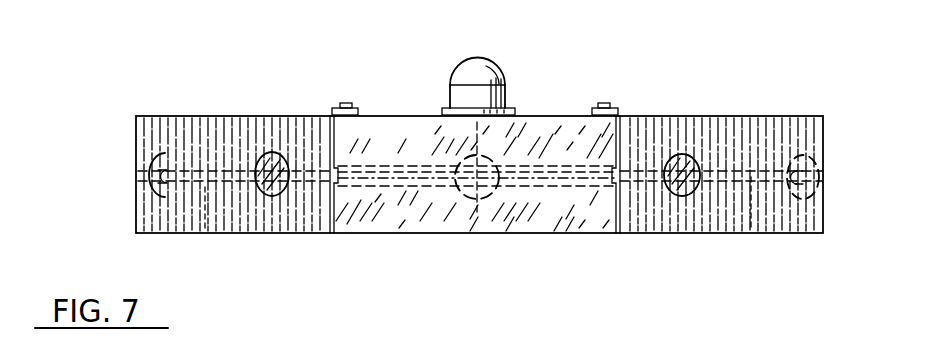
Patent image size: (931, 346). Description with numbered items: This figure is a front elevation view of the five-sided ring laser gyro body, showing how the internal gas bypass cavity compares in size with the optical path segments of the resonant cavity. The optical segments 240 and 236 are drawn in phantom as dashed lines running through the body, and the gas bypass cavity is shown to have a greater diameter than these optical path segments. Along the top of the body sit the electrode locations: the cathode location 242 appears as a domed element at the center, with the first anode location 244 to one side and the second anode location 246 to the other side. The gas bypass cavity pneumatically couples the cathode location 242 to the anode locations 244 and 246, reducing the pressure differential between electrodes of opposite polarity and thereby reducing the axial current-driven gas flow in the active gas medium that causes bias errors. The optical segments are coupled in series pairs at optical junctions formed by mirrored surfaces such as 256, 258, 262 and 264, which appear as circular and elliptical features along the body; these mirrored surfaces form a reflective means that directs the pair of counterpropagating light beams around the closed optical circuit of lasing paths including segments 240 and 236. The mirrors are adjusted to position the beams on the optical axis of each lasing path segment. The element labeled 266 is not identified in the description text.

The optical segment 236 is at (761, 232).
The optical segment 240 is at (206, 233).
The cathode location 242 is at (498, 76).
The anode 1 location 244 is at (344, 103).
The anode 2 location 246 is at (608, 102).
The mirrored surface 256 is at (137, 170).
The mirrored surface 258 is at (499, 155).
The mirrored surface 262 is at (700, 194).
The mirrored surface 264 is at (268, 196).
The end opening 266 is at (820, 169).